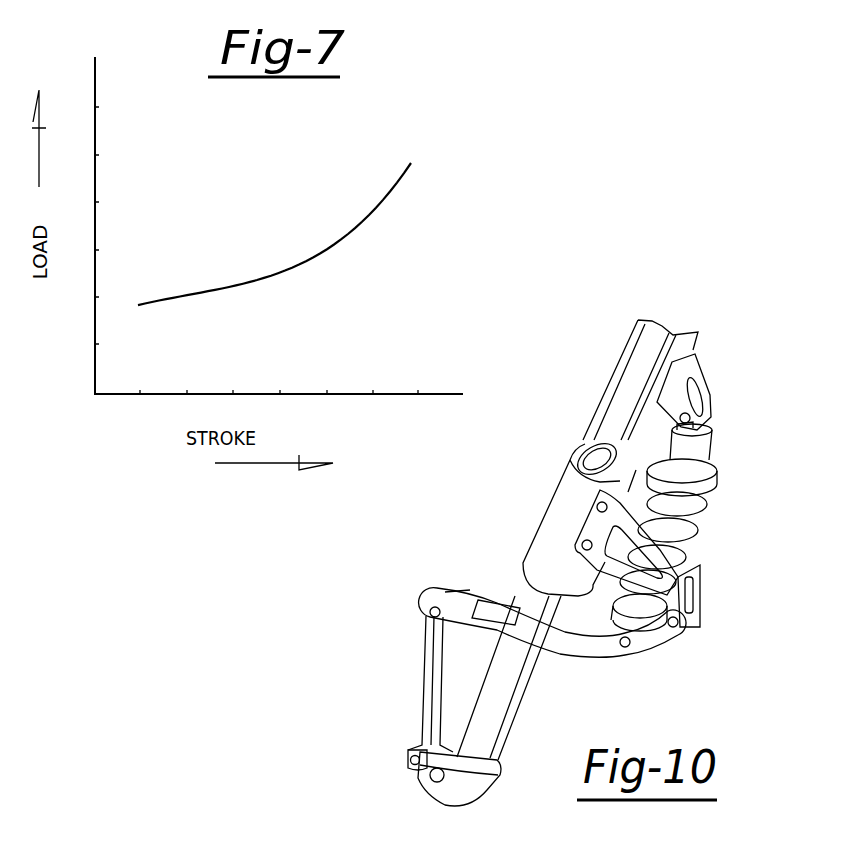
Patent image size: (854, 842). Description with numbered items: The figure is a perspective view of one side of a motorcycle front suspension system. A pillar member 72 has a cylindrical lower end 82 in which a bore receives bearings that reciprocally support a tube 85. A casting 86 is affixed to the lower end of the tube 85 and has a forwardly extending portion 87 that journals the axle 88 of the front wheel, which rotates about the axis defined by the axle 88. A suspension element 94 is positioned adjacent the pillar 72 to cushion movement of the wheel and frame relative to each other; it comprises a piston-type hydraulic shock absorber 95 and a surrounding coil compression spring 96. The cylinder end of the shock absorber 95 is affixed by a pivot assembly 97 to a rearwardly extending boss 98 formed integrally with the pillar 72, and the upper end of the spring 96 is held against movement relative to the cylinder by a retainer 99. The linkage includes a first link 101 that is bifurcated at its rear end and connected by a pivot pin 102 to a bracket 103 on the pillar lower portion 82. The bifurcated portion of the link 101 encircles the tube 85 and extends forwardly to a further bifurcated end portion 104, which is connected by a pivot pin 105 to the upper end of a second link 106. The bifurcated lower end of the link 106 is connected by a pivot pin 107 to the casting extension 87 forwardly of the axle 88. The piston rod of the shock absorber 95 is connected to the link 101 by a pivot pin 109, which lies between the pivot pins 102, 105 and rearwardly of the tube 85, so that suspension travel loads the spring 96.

The pillar member 72 is at (610, 382).
The cylindrical lower end 82 is at (550, 513).
The tube 85 is at (513, 723).
The casting 86 is at (480, 788).
The forwardly extending portion 87 is at (408, 766).
The axle 88 is at (430, 780).
The suspension element 94 is at (700, 462).
The hydraulic shock absorber 95 is at (722, 457).
The coil compression spring 96 is at (708, 510).
The pivot assembly 97 is at (705, 417).
The rearwardly extending boss 98 is at (706, 368).
The retainer 99 is at (718, 482).
The first link 101 is at (558, 652).
The pivot pin 102 is at (675, 628).
The bracket 103 is at (700, 578).
The bifurcated end portion 104 is at (466, 590).
The pivot pin 105 is at (428, 605).
The second link 106 is at (427, 687).
The pivot pin 107 is at (410, 758).
The pivot pin 109 is at (626, 648).